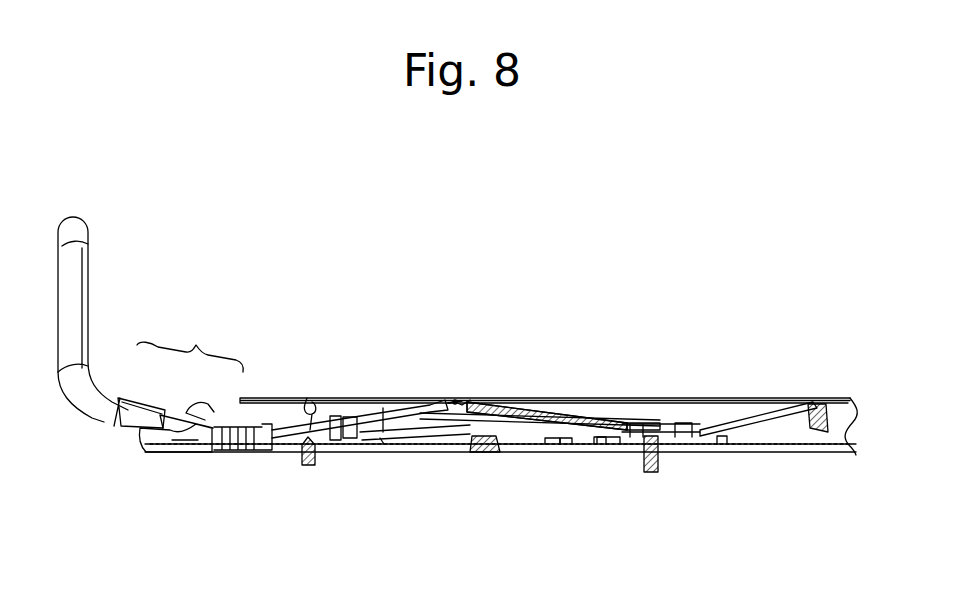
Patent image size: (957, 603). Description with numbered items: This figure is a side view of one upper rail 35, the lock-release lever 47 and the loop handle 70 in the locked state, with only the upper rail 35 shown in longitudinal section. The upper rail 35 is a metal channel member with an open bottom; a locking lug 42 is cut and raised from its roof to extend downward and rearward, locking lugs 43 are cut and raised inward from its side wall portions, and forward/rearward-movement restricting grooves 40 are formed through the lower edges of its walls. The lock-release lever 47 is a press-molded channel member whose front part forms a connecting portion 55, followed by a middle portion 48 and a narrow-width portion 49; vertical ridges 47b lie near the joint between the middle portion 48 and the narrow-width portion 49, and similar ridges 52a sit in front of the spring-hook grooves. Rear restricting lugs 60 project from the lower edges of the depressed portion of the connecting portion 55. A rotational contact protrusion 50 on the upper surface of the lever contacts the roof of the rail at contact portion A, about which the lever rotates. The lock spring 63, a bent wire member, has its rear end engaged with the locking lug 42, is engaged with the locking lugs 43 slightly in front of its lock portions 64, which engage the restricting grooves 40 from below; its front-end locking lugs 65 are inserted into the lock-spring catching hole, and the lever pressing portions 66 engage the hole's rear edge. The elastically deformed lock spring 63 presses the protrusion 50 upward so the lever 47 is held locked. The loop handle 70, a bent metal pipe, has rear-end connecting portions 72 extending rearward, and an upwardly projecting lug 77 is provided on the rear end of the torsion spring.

The loop handle 70 is at (80, 266).
The rear-end connecting portion 72 is at (121, 418).
The rear restricting lug 60 is at (173, 445).
The upwardly projecting lug 77 is at (204, 402).
The connecting portion 55 is at (190, 344).
The middle portion 48 is at (370, 412).
The ridge 47b is at (343, 412).
The front-end locking lug 65 is at (306, 410).
The contact portion A is at (455, 400).
The rotational contact protrusion 50 is at (460, 402).
The narrow-width portion 49 is at (553, 410).
The lever pressing portion 66 is at (378, 452).
The lock-release lever 47 is at (285, 453).
The locking lug 43 is at (470, 453).
The lock spring 63 is at (578, 453).
The lock portion 64 is at (642, 412).
The ridge 52a is at (640, 412).
The forward/rearward-movement restricting groove 40 is at (632, 458).
The upper rail 35 is at (735, 398).
The locking lug 42 is at (821, 403).